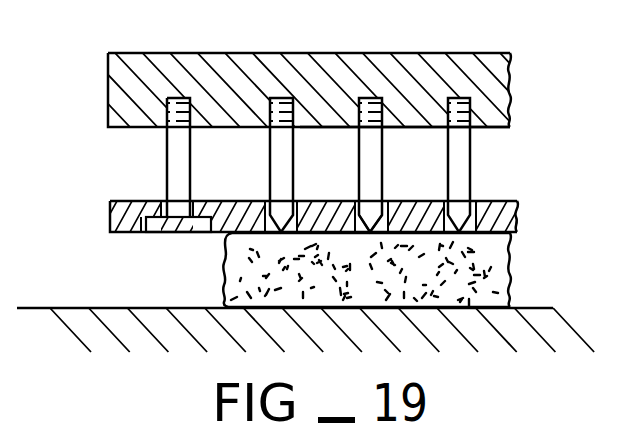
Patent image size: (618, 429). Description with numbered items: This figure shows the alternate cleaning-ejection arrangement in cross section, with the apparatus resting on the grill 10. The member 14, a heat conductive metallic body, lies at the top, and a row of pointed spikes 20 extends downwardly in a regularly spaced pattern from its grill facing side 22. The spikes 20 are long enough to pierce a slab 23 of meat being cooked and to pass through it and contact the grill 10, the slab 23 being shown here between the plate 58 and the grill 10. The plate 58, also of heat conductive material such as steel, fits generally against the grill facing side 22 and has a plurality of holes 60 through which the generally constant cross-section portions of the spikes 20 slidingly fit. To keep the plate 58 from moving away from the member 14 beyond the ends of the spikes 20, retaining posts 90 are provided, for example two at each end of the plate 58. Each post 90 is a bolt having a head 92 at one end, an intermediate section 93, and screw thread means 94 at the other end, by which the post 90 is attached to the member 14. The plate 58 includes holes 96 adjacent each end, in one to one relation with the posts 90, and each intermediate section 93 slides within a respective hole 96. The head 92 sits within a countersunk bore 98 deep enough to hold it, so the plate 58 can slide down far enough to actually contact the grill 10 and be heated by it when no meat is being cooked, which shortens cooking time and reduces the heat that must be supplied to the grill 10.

The grill 10 is at (537, 308).
The member 14 is at (400, 53).
The pointed spikes 20 is at (383, 158).
The grill facing side 22 is at (498, 128).
The slab of meat 23 is at (512, 263).
The plate 58 is at (110, 207).
The holes 60 is at (362, 206).
The retaining posts 90 is at (166, 151).
The head 92 is at (191, 226).
The intermediate section 93 is at (190, 152).
The screw thread means 94 is at (190, 100).
The holes 96 is at (175, 206).
The countersunk bore 98 is at (151, 232).